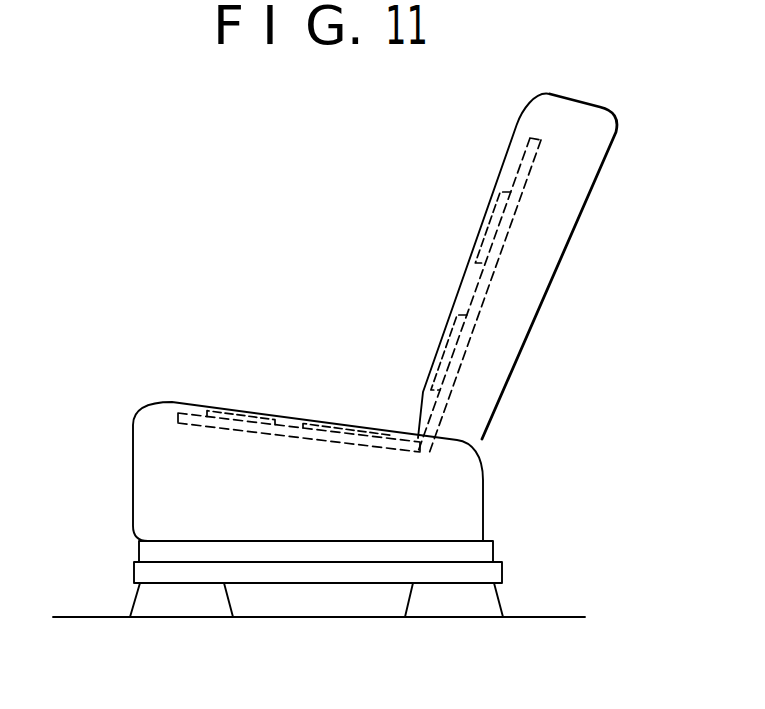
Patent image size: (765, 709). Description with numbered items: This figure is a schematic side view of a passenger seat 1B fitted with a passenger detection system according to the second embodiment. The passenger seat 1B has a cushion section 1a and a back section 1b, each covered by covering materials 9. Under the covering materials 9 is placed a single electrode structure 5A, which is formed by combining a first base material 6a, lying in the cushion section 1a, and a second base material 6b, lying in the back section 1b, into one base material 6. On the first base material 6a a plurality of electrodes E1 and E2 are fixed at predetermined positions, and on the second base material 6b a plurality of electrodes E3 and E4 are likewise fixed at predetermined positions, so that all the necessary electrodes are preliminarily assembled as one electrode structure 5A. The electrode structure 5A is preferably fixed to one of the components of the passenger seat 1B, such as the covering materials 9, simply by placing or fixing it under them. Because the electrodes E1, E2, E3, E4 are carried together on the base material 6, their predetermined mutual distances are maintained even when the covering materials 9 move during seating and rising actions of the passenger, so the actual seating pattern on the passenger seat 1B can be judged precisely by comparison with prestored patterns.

The cushion section 1a is at (133, 425).
The back section 1b is at (517, 130).
The passenger seat 1B is at (588, 203).
The electrode structure 5A is at (478, 287).
The base material 6 is at (180, 405).
The first base material 6a is at (297, 440).
The second base material 6b is at (453, 378).
The covering materials 9 is at (133, 468).
The electrode E1 is at (237, 405).
The electrode E2 is at (337, 422).
The electrode E3 is at (440, 332).
The electrode E4 is at (490, 222).